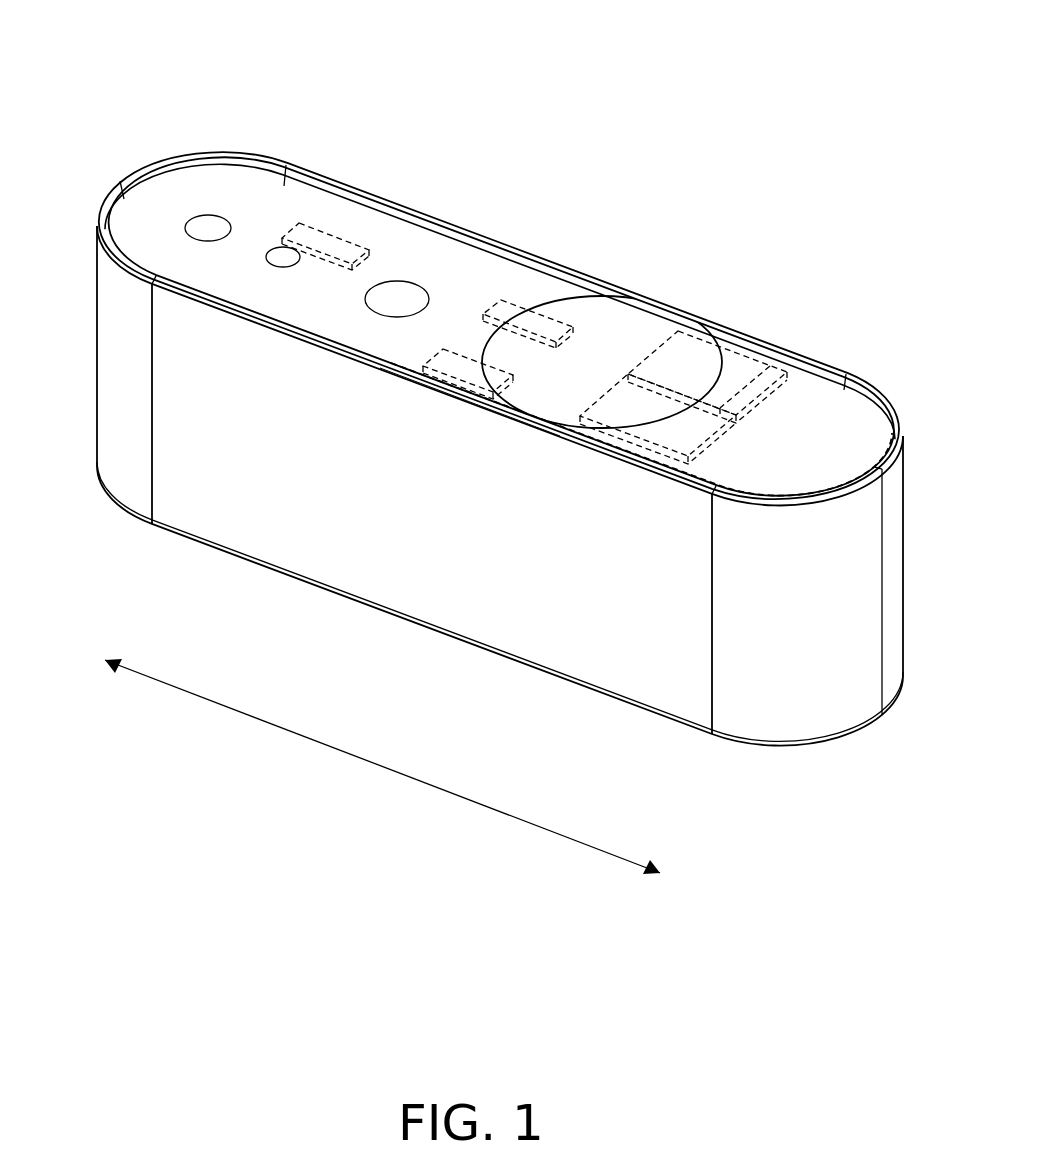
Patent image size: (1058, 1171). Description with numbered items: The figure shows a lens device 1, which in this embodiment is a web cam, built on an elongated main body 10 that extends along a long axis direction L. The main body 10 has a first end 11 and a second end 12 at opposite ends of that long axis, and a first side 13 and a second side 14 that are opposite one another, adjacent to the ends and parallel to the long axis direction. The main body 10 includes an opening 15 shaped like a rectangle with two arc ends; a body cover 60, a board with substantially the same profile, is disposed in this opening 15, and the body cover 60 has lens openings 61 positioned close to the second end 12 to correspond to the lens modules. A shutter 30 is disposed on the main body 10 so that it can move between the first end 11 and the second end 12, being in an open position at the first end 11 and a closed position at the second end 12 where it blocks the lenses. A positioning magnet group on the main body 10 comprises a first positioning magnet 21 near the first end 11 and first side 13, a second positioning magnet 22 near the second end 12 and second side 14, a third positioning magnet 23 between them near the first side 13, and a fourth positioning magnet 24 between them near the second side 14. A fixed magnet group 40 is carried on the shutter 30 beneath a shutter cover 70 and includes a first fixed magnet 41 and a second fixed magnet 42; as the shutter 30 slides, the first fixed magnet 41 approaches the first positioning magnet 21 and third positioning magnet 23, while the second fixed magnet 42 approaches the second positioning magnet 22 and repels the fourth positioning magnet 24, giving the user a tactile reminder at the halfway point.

The lens device 1 is at (186, 86).
The main body 10 is at (437, 610).
The first end 11 is at (892, 470).
The second end 12 is at (125, 183).
The first side 13 is at (570, 648).
The second side 14 is at (597, 280).
The opening 15 is at (161, 156).
The first positioning magnet 21 is at (665, 485).
The second positioning magnet 22 is at (310, 232).
The third positioning magnet 23 is at (437, 385).
The fourth positioning magnet 24 is at (503, 303).
The shutter 30 is at (497, 412).
The fixed magnet group 40 is at (709, 340).
The first fixed magnet 41 is at (592, 428).
The second fixed magnet 42 is at (752, 375).
The body cover 60 is at (440, 253).
The lens openings 61 is at (395, 297).
The shutter cover 70 is at (653, 320).